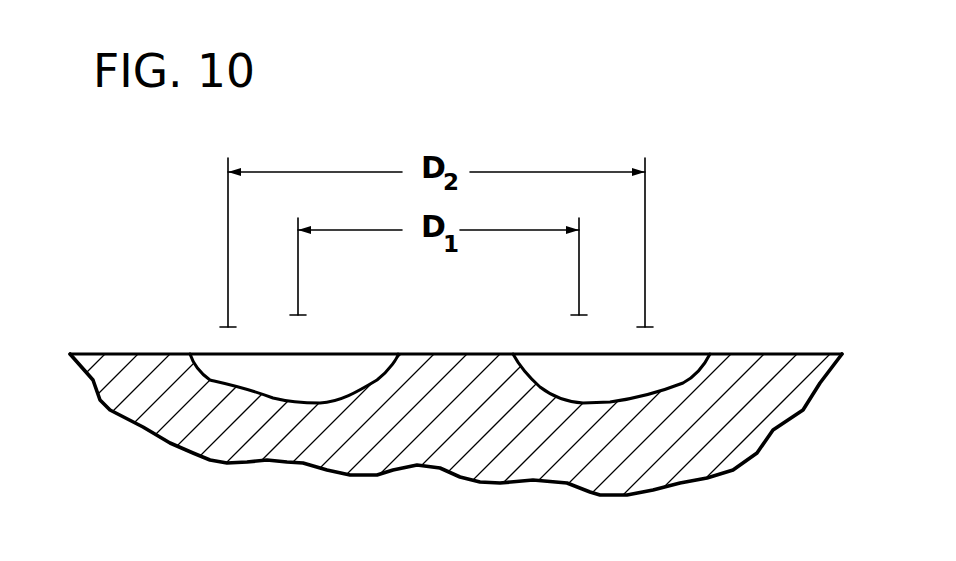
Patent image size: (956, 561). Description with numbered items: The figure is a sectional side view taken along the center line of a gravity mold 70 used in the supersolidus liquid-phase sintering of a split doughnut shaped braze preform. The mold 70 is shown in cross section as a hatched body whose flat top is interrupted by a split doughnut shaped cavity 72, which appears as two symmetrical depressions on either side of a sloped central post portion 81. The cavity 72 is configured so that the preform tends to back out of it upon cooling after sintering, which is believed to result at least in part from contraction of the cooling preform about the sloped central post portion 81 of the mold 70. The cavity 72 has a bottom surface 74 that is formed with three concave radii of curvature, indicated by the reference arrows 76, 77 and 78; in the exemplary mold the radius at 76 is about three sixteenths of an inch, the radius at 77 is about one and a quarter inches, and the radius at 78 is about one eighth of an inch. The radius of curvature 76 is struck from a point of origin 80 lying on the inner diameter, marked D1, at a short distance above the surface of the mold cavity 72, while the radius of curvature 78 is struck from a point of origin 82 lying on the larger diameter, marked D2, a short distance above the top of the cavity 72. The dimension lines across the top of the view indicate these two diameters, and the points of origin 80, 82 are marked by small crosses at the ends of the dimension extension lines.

The gravity mold 70 is at (775, 363).
The split doughnut shaped cavity 72 is at (333, 373).
The bottom surface 74 is at (222, 385).
The radius of curvature 76 is at (533, 382).
The radius of curvature 77 is at (237, 382).
The radius of curvature 78 is at (645, 327).
The point of origin 80 is at (298, 315).
The sloped central post portion 81 is at (455, 367).
The point of origin 82 is at (228, 327).